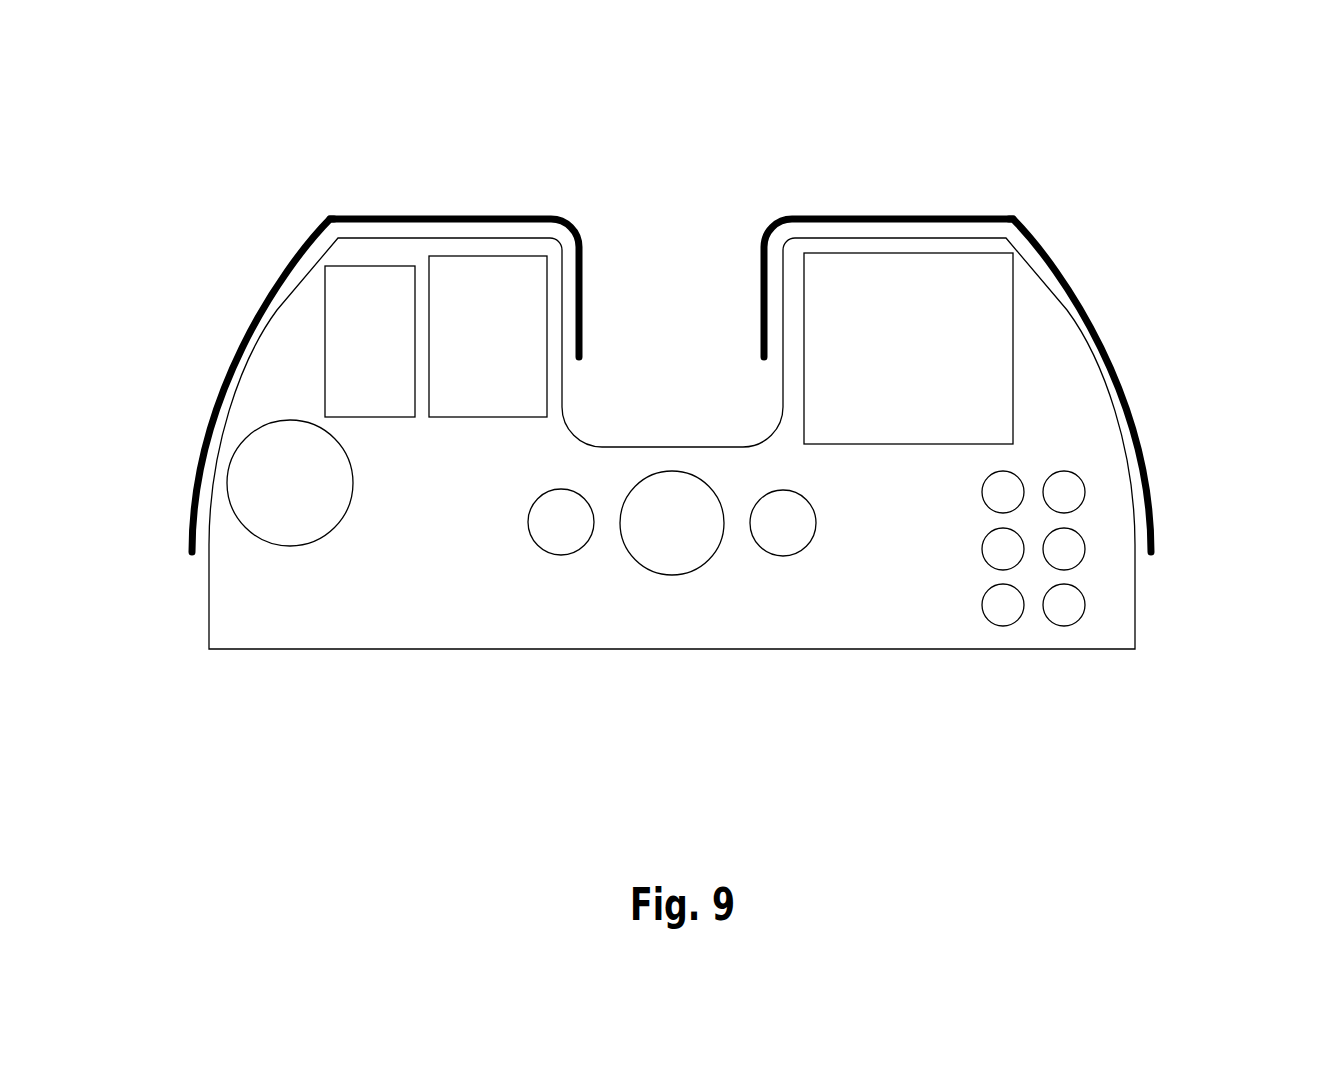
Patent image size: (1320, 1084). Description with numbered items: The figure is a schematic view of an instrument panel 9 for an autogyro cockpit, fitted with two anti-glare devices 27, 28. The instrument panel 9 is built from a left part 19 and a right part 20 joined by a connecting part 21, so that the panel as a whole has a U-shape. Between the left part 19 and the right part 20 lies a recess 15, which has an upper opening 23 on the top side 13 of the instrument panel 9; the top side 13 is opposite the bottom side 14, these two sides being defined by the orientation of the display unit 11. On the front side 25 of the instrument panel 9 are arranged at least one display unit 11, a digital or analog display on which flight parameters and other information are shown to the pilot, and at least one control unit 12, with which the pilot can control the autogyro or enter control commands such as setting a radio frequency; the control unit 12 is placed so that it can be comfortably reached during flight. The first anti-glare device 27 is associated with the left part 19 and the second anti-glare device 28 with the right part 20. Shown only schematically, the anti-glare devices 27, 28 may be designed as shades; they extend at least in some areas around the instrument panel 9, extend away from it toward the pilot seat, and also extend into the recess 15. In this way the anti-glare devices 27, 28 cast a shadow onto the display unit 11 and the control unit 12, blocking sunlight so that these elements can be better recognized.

The instrument panel 9 is at (240, 157).
The display unit 11 is at (905, 293).
The control unit 12 is at (1067, 553).
The top side 13 is at (430, 237).
The bottom side 14 is at (425, 647).
The recess 15 is at (719, 337).
The left part 19 is at (363, 553).
The right part 20 is at (938, 548).
The connecting part 21 is at (673, 635).
The upper opening 23 is at (663, 250).
The front side 25 is at (772, 593).
The first anti-glare device 27 is at (260, 300).
The second anti-glare device 28 is at (1090, 311).